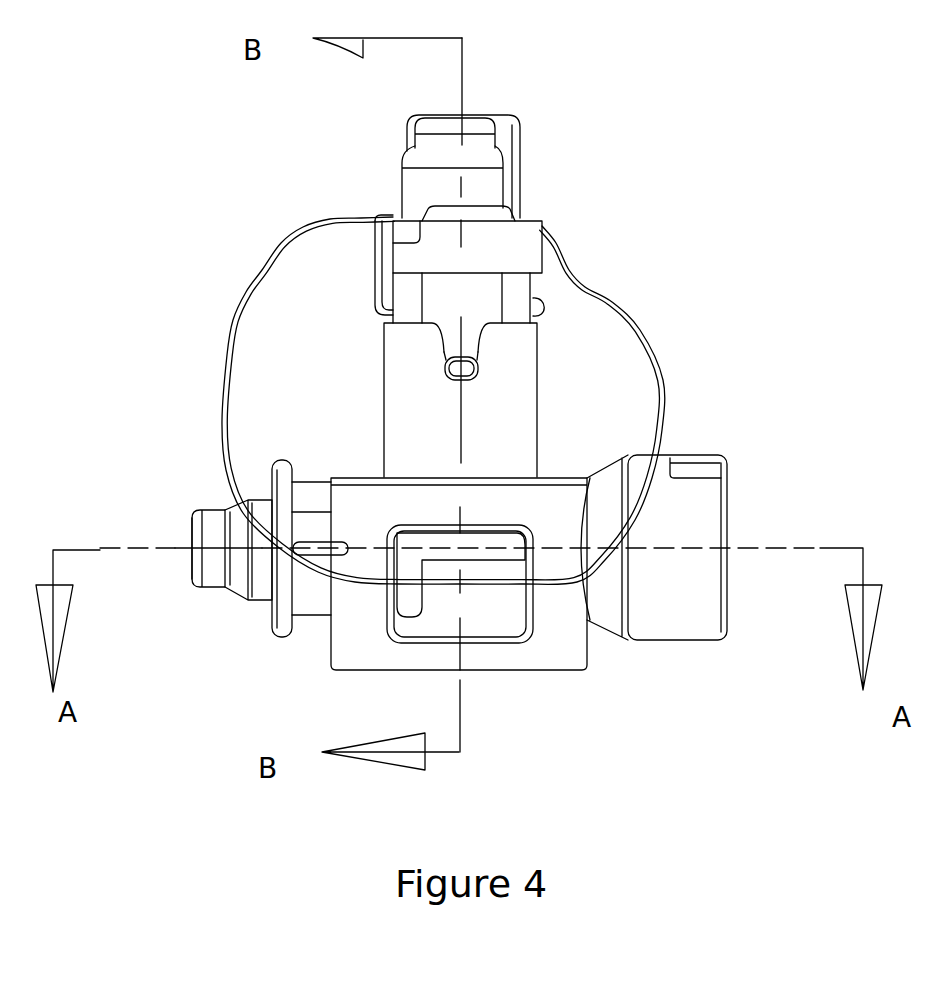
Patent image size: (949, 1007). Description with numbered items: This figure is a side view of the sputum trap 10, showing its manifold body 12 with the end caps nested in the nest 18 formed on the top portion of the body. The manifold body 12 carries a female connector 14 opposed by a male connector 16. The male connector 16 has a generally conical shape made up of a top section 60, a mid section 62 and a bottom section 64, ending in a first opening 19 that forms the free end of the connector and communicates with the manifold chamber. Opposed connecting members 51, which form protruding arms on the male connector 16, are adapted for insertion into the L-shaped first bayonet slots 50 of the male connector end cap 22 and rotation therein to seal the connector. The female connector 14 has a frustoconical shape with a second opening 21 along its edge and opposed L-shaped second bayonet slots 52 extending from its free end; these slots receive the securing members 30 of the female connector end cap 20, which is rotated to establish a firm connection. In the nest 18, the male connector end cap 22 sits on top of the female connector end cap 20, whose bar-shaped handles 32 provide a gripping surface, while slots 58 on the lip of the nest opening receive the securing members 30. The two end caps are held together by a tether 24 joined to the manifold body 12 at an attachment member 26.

The sputum trap 10 is at (633, 183).
The manifold body 12 is at (562, 658).
The female connector 14 is at (651, 640).
The male connector 16 is at (242, 615).
The nest 18 is at (538, 372).
The first opening 19 is at (190, 545).
The female connector end cap 20 is at (545, 312).
The second opening 21 is at (727, 528).
The male connector end cap 22 is at (478, 115).
The tether 24 is at (221, 355).
The attachment member 26 is at (493, 643).
The securing members 30 is at (474, 370).
The handles 32 is at (377, 263).
The first bayonet slots 50 is at (408, 234).
The connecting members 51 is at (293, 460).
The second bayonet slots 52 is at (692, 470).
The slots 58 is at (440, 345).
The top section 60 is at (208, 590).
The mid section 62 is at (252, 502).
The bottom section 64 is at (262, 495).